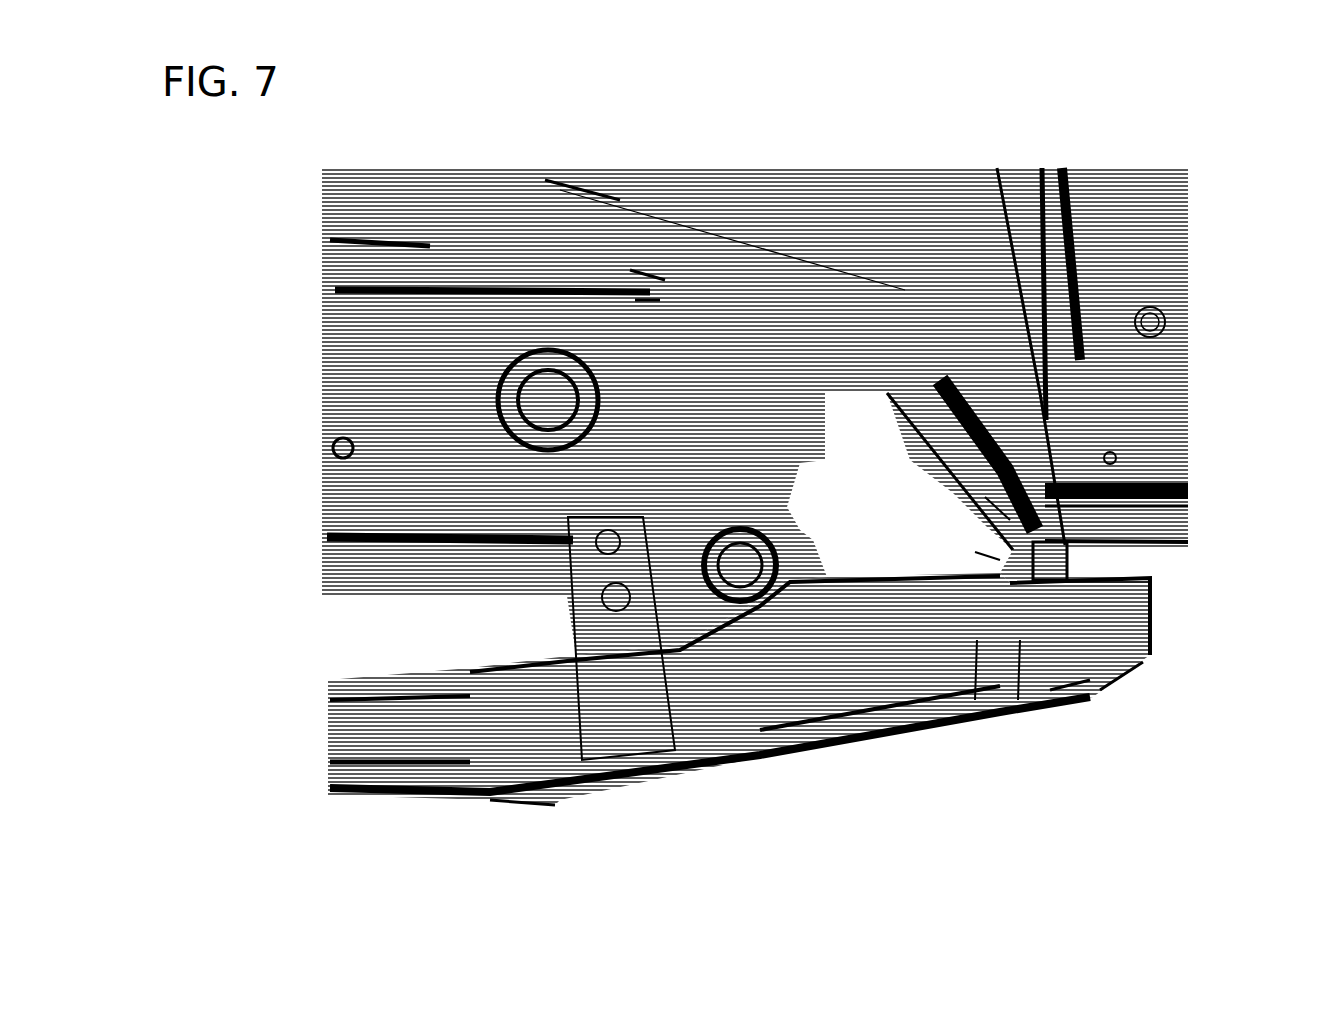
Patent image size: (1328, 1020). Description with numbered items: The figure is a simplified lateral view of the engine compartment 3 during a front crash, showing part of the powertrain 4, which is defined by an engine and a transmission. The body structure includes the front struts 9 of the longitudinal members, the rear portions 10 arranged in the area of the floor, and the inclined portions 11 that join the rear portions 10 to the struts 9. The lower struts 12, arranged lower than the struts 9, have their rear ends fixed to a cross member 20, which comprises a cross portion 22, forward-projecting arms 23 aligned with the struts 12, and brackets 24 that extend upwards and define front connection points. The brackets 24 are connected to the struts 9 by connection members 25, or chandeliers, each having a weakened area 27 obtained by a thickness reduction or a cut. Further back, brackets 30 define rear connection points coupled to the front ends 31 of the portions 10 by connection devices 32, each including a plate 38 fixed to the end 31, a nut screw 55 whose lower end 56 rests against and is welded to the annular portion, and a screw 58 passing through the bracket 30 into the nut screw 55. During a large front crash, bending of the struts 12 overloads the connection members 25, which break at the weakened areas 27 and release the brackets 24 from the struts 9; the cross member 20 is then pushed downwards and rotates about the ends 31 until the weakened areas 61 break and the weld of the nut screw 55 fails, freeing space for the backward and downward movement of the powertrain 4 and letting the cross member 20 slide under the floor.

The engine compartment 3 is at (352, 630).
The powertrain 4 is at (426, 564).
The front struts 9 is at (557, 194).
The rear portions 10 is at (1175, 545).
The inclined portions 11 is at (907, 408).
The lower struts 12 is at (334, 770).
The cross member 20 is at (643, 786).
The cross portion 22 is at (835, 683).
The arms 23 is at (553, 790).
The brackets 24 is at (583, 617).
The connection members 25 is at (645, 295).
The weakened area 27 is at (326, 464).
The brackets 30 is at (1130, 682).
The front ends 31 is at (1165, 504).
The connection devices 32 is at (965, 546).
The plate 38 is at (992, 494).
The nut screw 55 is at (977, 640).
The lower end 56 is at (1020, 640).
The screw 58 is at (1068, 692).
The weakened area 61 is at (1025, 569).